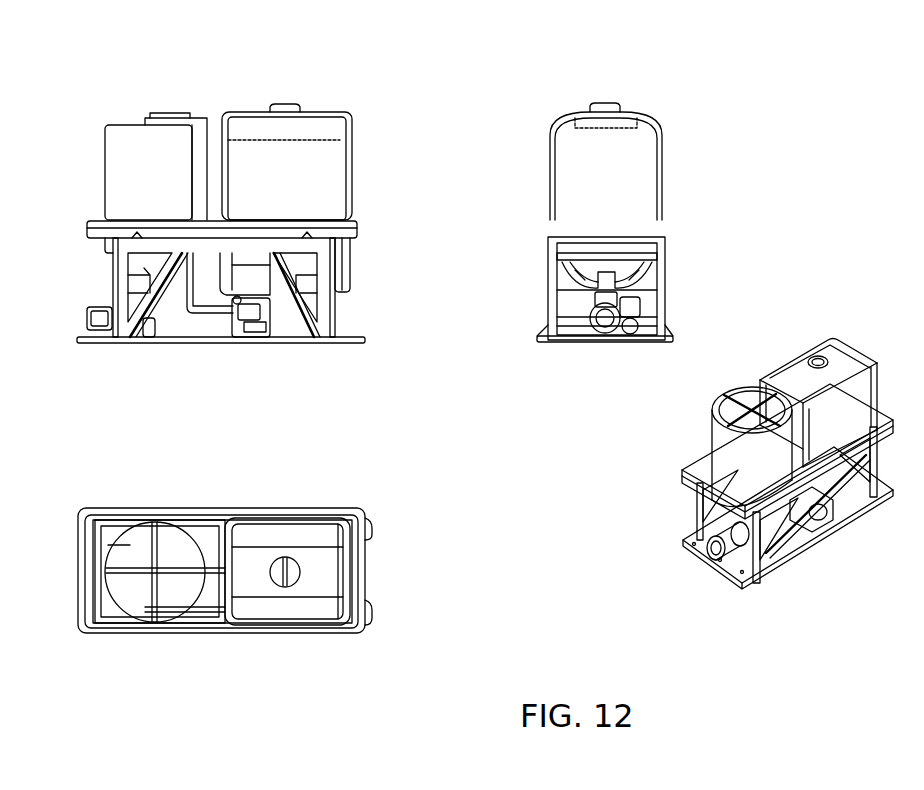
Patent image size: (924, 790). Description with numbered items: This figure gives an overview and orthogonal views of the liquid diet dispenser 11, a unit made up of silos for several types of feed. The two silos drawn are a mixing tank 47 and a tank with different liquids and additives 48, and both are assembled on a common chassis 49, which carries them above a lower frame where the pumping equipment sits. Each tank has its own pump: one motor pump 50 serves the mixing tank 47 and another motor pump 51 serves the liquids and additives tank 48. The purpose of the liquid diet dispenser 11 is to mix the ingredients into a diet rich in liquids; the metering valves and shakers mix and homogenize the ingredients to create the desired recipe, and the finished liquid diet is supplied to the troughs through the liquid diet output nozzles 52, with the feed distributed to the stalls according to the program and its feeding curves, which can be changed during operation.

The liquid diet dispenser 11 is at (208, 119).
The mixing tank 47 is at (146, 520).
The tank with different liquids and additives 48 is at (268, 518).
The chassis 49 is at (87, 223).
The motor pump 50 is at (110, 344).
The motor pump 51 is at (268, 334).
The liquid diet output nozzles 52 is at (673, 329).